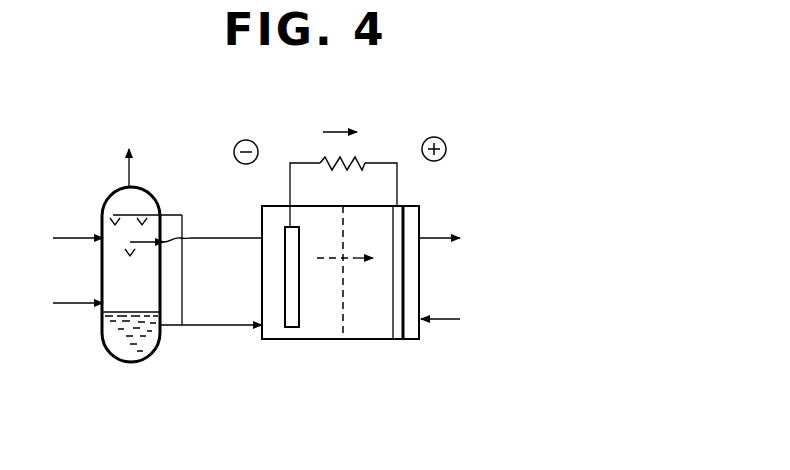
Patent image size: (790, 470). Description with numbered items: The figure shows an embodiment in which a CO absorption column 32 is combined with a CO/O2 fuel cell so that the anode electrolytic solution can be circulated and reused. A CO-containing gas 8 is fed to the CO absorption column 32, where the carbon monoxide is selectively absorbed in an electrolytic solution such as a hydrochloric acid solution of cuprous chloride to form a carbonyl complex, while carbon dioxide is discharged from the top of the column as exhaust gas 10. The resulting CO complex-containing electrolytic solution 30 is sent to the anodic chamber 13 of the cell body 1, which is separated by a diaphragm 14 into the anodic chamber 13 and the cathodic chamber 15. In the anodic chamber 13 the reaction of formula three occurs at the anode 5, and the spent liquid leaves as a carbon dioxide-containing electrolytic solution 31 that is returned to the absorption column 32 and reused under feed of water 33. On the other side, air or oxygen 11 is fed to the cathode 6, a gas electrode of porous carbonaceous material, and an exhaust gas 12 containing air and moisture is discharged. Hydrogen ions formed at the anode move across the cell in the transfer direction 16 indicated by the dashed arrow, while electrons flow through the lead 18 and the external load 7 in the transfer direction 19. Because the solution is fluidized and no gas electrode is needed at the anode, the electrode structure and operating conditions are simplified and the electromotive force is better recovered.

The cell body 1 is at (272, 341).
The anode 5 is at (285, 280).
The cathode 6 is at (400, 272).
The load 7 is at (321, 160).
The CO-containing gas 8 is at (70, 303).
The CO2-containing exhaust gas 10 is at (127, 173).
The air (or O2) 11 is at (448, 320).
The exhaust gas 12 is at (442, 238).
The anodic chamber 13 is at (314, 341).
The diaphragm 14 is at (339, 341).
The cathodic chamber 15 is at (369, 341).
The transfer direction of hydrogen ion 16 is at (352, 256).
The lead 18 is at (290, 188).
The transfer direction of electrons 19 is at (341, 131).
The CO complex-containing electrolytic solution 30 is at (204, 326).
The CO2-containing electrolytic solution 31 is at (215, 237).
The CO absorption column 32 is at (128, 362).
The water 33 is at (67, 238).